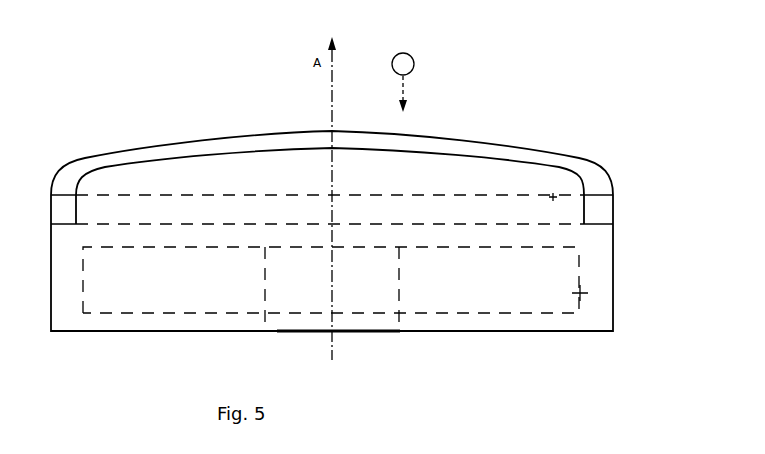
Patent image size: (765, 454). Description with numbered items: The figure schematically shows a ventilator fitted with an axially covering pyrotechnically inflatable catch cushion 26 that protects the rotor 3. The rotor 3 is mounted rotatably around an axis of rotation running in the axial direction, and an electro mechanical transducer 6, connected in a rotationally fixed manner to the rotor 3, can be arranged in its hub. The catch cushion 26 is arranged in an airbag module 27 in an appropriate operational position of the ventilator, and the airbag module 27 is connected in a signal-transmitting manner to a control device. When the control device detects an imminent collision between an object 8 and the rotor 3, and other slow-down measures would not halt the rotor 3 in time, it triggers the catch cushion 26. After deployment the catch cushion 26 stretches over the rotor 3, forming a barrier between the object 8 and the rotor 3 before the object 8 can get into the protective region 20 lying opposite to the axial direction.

The pyrotechnically inflatable catch cushion 26 is at (553, 158).
The airbag module 27 is at (605, 208).
The protective region 20 is at (553, 197).
The electro mechanical transducer 6 is at (580, 293).
The rotor 3 is at (356, 356).
The object 8 is at (414, 58).